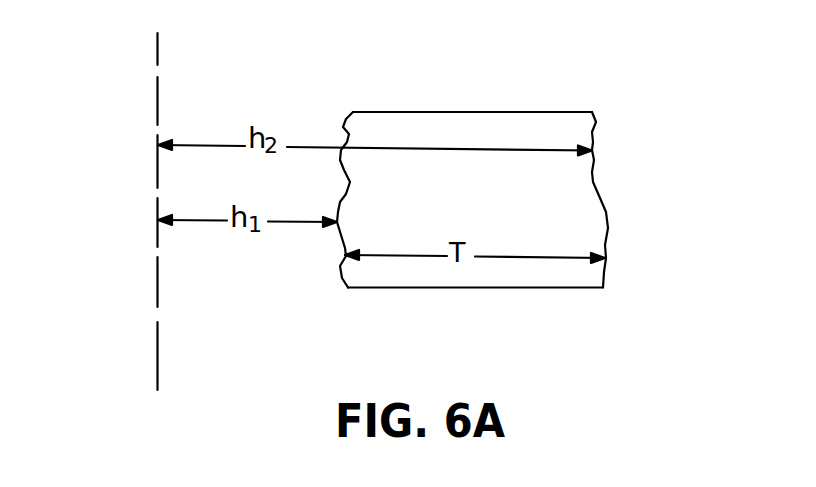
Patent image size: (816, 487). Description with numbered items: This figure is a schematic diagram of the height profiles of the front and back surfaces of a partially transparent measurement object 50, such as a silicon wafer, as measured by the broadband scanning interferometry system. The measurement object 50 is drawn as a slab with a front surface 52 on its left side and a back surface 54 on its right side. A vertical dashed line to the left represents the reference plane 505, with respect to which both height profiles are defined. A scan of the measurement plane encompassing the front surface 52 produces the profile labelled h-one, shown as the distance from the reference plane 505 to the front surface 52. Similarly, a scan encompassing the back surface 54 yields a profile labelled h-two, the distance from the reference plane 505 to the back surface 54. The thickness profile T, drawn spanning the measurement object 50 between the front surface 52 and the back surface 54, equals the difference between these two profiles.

The reference plane 505 is at (157, 88).
The measurement object 50 is at (465, 205).
The front surface 52 is at (340, 147).
The back surface 54 is at (605, 258).